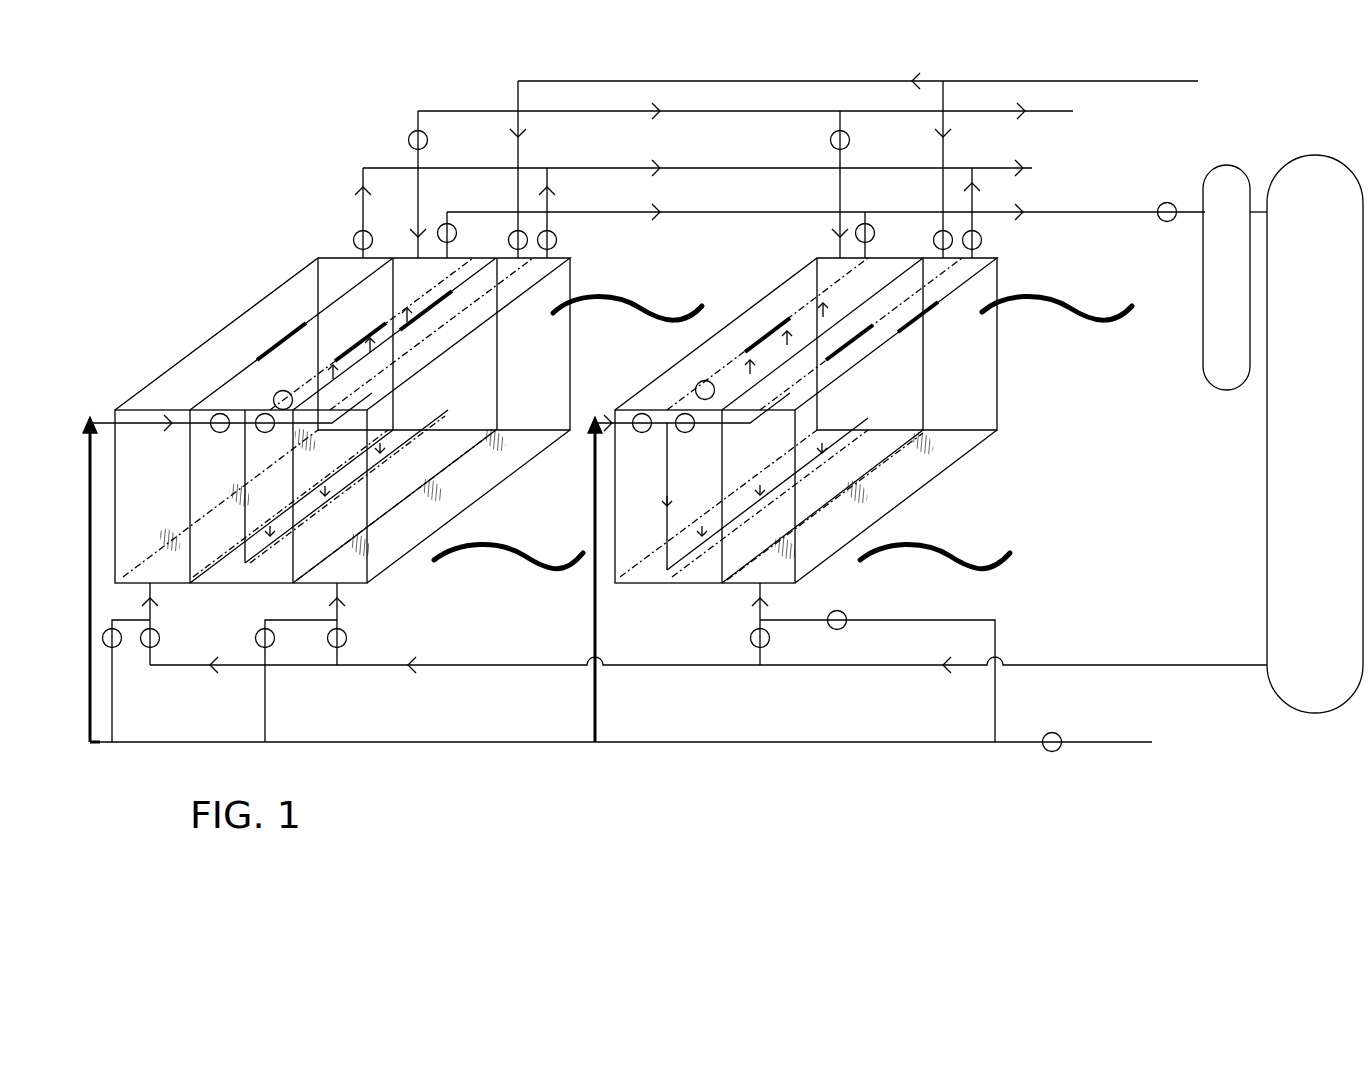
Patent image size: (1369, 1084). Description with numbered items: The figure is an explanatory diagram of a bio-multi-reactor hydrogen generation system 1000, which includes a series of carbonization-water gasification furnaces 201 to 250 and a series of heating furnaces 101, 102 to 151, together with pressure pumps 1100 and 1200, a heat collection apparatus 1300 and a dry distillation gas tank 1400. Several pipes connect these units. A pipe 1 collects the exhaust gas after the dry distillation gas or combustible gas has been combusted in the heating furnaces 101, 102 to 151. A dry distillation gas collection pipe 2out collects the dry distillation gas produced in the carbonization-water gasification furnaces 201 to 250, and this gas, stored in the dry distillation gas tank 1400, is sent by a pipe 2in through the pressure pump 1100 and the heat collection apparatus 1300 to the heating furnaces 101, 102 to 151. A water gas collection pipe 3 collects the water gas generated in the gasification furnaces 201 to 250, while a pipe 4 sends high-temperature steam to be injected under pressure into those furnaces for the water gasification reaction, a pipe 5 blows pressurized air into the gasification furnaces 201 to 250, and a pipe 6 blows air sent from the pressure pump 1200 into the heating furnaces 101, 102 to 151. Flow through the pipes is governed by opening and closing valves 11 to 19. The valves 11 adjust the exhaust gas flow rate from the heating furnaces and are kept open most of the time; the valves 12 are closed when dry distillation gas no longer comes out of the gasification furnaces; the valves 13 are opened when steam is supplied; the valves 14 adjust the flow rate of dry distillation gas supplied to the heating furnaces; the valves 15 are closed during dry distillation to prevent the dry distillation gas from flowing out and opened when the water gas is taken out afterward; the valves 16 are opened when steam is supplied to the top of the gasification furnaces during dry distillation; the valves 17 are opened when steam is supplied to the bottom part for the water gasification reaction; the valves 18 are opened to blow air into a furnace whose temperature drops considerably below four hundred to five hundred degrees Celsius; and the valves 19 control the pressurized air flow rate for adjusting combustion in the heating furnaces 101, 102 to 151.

The bio-multi-reactor hydrogen generation system 1000 is at (699, 423).
The pipe 1 is at (778, 168).
The pipe 2in is at (1063, 665).
The dry distillation gas collection pipe 2out is at (1073, 214).
The water gas collection pipe 3 is at (727, 111).
The pipe 4 is at (727, 81).
The pipe 5 is at (137, 426).
The pipe 6 is at (540, 744).
The opening and closing valve 11 is at (372, 236).
The opening and closing valve 12 is at (456, 230).
The opening and closing valve 13 is at (508, 246).
The opening and closing valve 14 is at (160, 638).
The opening and closing valve 15 is at (428, 140).
The opening and closing valve 16 is at (274, 396).
The opening and closing valve 17 is at (265, 434).
The opening and closing valve 18 is at (220, 434).
The opening and closing valve 19 is at (117, 646).
The heating furnace 101 is at (240, 341).
The heating furnace 102 is at (544, 360).
The heating furnace 151 is at (976, 379).
The carbonization-water gasification furnace 201 is at (342, 322).
The carbonization-water gasification furnace 250 is at (780, 311).
The pressure pump 1100 is at (1167, 200).
The pressure pump 1200 is at (1052, 732).
The heat collection apparatus 1300 is at (1225, 392).
The dry distillation gas tank 1400 is at (1315, 155).